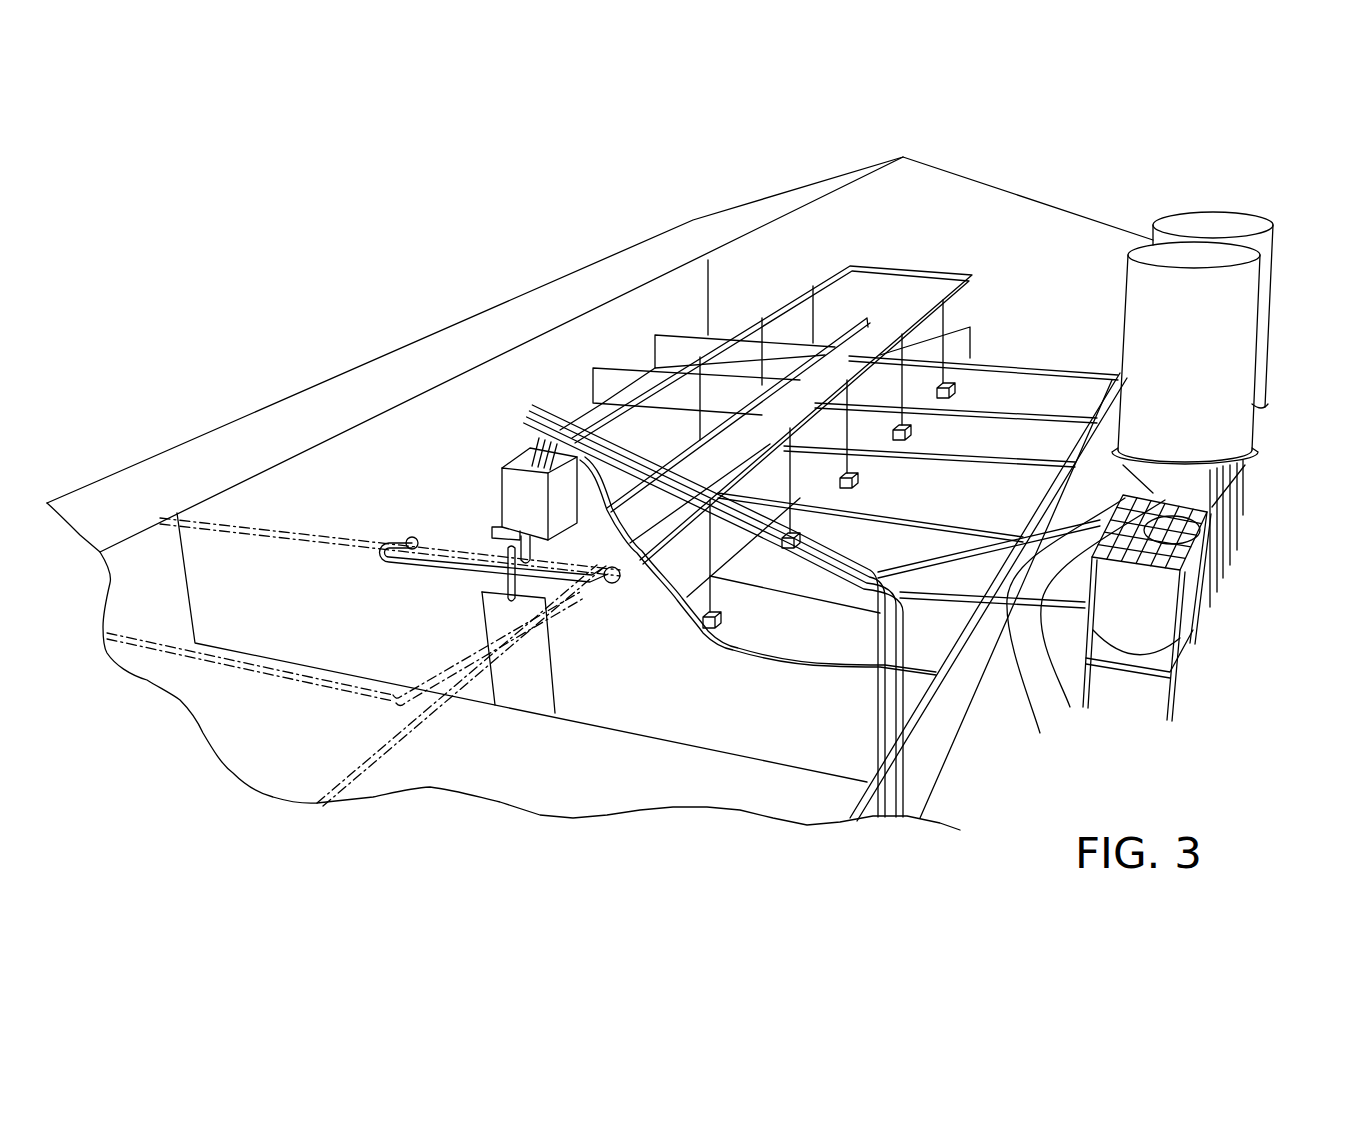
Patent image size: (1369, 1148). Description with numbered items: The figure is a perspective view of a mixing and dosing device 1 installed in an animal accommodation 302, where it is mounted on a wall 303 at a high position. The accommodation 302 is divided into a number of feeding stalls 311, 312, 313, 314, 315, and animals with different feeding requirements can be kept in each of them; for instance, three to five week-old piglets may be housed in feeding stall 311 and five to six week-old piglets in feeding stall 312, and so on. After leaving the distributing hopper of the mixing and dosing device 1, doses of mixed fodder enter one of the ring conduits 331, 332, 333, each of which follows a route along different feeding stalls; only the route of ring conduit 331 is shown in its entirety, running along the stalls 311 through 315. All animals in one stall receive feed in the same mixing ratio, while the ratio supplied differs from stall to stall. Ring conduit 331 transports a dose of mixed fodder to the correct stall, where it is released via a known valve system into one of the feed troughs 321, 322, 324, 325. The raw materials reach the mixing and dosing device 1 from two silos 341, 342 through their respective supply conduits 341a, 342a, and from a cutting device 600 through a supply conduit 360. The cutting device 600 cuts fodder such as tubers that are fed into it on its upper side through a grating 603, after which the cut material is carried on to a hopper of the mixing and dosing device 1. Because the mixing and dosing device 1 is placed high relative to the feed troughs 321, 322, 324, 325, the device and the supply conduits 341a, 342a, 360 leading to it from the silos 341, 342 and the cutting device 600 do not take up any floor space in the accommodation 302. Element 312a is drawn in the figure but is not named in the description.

The mixing and dosing device 1 is at (514, 497).
The animal accommodation 302 is at (1038, 230).
The wall 303 is at (368, 492).
The feeding stall 311 is at (845, 634).
The feeding stall 312 is at (787, 572).
The sensor 312a is at (863, 482).
The feeding stall 313 is at (1025, 502).
The feeding stall 314 is at (1038, 447).
The feeding stall 315 is at (1053, 404).
The feed trough 321 is at (727, 630).
The feed trough 322 is at (803, 540).
The feed trough 324 is at (915, 430).
The feed trough 325 is at (975, 360).
The ring conduit 331 is at (907, 257).
The ring conduit 332 is at (427, 717).
The ring conduit 333 is at (273, 672).
The silo 341 is at (1227, 353).
The supply conduit 341a is at (1066, 630).
The silo 342 is at (1207, 223).
The supply conduit 342a is at (1103, 619).
The supply conduit 360 is at (958, 742).
The cutting device 600 is at (1150, 627).
The grating 603 is at (1190, 537).